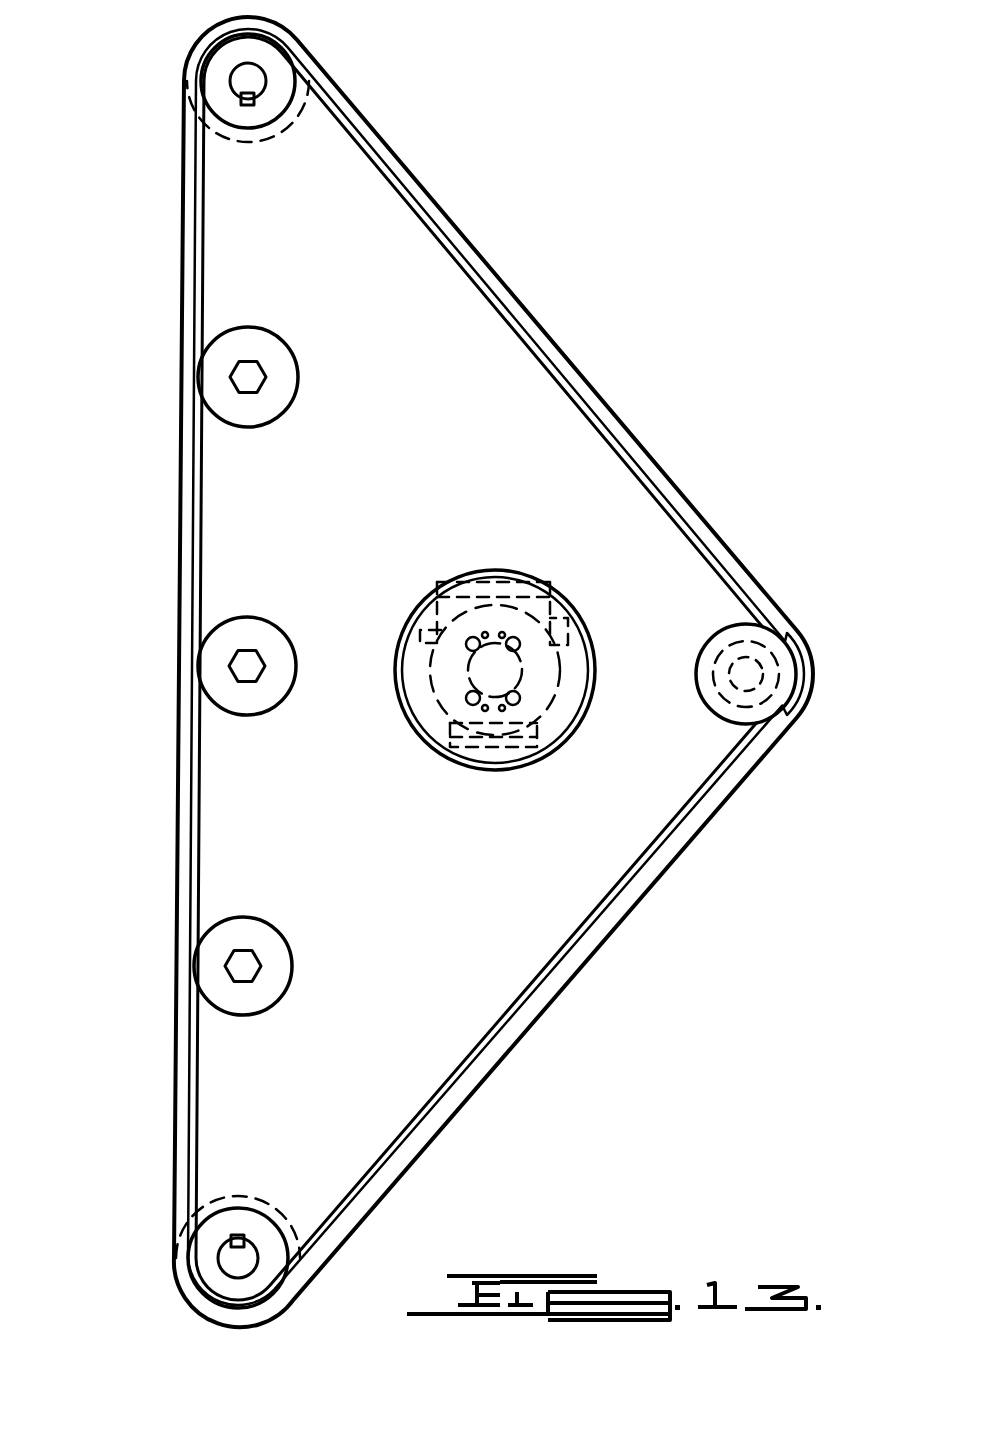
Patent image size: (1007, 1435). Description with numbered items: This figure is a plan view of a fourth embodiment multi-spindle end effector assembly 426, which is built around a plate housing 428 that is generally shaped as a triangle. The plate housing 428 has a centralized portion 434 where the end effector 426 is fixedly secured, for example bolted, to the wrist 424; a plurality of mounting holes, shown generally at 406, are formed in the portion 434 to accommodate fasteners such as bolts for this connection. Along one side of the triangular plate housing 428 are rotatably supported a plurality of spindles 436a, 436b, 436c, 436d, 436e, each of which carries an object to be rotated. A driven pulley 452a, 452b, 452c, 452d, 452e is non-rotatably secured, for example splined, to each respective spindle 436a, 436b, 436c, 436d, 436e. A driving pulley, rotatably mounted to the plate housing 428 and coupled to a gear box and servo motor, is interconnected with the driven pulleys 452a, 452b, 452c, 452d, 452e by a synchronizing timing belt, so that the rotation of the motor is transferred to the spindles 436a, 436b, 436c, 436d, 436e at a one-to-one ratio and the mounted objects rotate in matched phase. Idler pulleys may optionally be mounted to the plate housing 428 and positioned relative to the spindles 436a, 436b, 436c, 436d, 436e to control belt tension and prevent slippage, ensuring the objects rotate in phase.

The mounting holes 406 is at (451, 694).
The wrist 424 is at (543, 604).
The end effector assembly 426 is at (718, 460).
The plate housing 428 is at (597, 407).
The centralized portion 434 is at (555, 735).
The spindle 436a is at (238, 80).
The spindle 436b is at (232, 377).
The spindle 436c is at (226, 667).
The spindle 436d is at (228, 966).
The spindle 436e is at (230, 1263).
The driven pulley 452a is at (279, 57).
The driven pulley 452b is at (280, 367).
The driven pulley 452c is at (263, 627).
The driven pulley 452d is at (277, 940).
The driven pulley 452e is at (247, 1217).